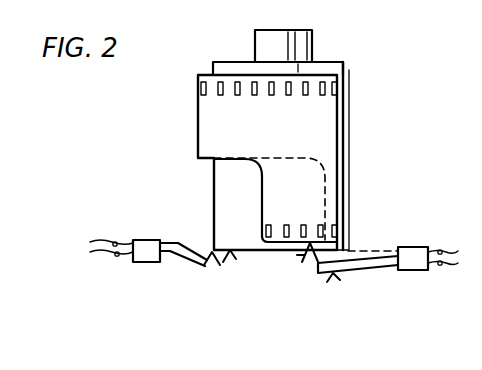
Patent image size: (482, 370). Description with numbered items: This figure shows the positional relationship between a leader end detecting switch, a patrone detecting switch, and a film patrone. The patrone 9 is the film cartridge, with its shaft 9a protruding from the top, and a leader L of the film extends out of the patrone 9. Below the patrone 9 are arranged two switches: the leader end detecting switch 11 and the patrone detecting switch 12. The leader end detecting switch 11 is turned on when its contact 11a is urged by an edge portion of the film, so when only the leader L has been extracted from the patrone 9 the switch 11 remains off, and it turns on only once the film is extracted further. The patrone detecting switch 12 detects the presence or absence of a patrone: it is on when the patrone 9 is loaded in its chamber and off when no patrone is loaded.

The leader L is at (210, 121).
The patrone 9 is at (322, 68).
The shaft 9a is at (297, 28).
The leader end detecting switch 11 is at (412, 250).
The contact 11a is at (318, 265).
The patrone detecting switch 12 is at (147, 246).